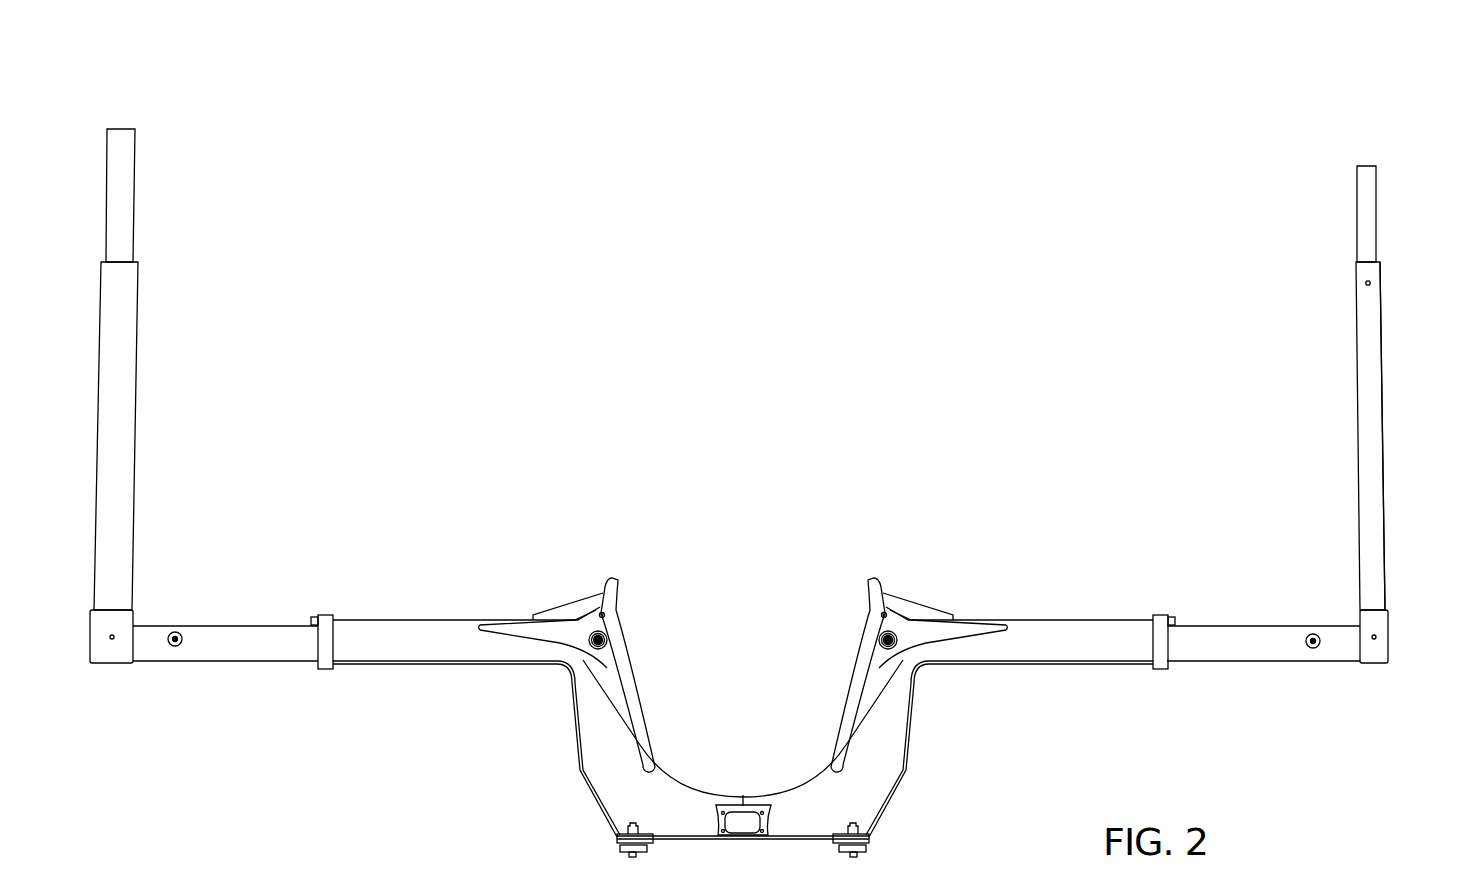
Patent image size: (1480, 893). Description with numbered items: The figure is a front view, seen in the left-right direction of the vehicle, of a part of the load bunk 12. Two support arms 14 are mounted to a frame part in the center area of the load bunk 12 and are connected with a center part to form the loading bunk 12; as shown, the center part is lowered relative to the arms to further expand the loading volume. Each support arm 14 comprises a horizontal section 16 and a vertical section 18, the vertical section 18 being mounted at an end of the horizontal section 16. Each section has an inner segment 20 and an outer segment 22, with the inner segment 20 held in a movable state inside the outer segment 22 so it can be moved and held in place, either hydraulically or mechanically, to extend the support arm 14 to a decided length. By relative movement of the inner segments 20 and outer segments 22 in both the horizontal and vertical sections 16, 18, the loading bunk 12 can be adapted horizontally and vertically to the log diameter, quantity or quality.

The load bunk 12 is at (780, 85).
The support arm 14 is at (1382, 307).
The horizontal section 16 is at (1240, 627).
The vertical section 18 is at (1357, 343).
The inner segment 20 is at (1357, 210).
The outer segment 22 is at (1383, 410).